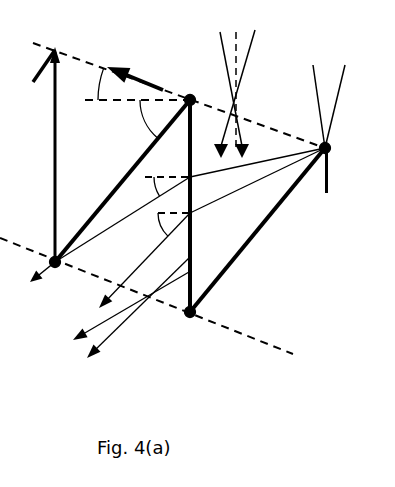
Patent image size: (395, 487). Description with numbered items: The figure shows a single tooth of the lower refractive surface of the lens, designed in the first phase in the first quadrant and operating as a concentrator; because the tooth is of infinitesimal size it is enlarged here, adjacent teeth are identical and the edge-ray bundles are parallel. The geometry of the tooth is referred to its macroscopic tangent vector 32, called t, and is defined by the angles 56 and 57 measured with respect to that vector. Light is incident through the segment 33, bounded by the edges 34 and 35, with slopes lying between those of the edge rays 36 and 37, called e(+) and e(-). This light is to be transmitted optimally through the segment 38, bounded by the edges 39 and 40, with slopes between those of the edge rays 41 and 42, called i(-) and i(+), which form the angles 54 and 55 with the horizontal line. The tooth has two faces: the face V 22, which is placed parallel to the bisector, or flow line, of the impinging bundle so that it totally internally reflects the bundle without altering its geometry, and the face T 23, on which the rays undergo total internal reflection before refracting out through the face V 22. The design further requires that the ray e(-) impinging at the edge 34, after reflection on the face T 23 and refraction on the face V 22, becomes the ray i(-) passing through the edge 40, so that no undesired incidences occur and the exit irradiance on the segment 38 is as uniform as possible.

The face V 22 is at (190, 230).
The face T 23 is at (298, 188).
The macroscopic tangent vector 32 is at (135, 69).
The incident segment 33 is at (179, 95).
The edge of incident segment 34 is at (339, 129).
The edge of incident segment 35 is at (190, 87).
The edge ray e(+) 36 is at (242, 81).
The edge ray e(-) 37 is at (217, 81).
The exit segment 38 is at (146, 296).
The edge of exit segment 39 is at (198, 326).
The edge of exit segment 40 is at (50, 275).
The edge ray i(-) 41 is at (111, 318).
The edge ray i(+) 42 is at (138, 318).
The angle phi 54 is at (122, 219).
The angle phi prime 55 is at (144, 260).
The angle delta 56 is at (132, 119).
The angle gamma 57 is at (128, 84).